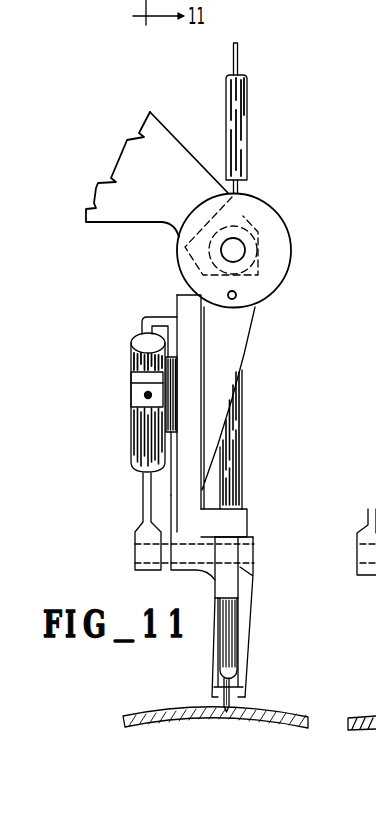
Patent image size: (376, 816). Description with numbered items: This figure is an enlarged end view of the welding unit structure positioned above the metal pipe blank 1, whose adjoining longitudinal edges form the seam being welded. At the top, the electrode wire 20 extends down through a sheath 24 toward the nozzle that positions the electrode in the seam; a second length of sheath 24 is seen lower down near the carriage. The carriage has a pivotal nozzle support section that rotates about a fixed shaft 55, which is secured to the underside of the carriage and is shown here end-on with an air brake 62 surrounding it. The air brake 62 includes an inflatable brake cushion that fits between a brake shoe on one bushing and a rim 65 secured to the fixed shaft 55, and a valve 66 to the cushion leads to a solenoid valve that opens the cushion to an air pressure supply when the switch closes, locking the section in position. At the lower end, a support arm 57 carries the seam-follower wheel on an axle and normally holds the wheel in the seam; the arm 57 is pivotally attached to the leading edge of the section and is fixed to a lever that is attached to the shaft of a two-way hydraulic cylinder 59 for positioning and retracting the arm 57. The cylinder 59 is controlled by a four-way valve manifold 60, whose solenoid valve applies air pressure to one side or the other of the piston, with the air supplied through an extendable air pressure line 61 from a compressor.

The metal pipe blank 1 is at (152, 712).
The electrode wire 20 is at (238, 62).
The sheath 24 is at (239, 118).
The fixed shaft 55 is at (234, 249).
The support arm 57 is at (245, 613).
The two-way hydraulic cylinder 59 is at (138, 355).
The four-way valve manifold 60 is at (133, 389).
The air pressure line 61 is at (144, 398).
The air brake 62 is at (297, 210).
The rim 65 is at (275, 248).
The valve 66 is at (237, 297).